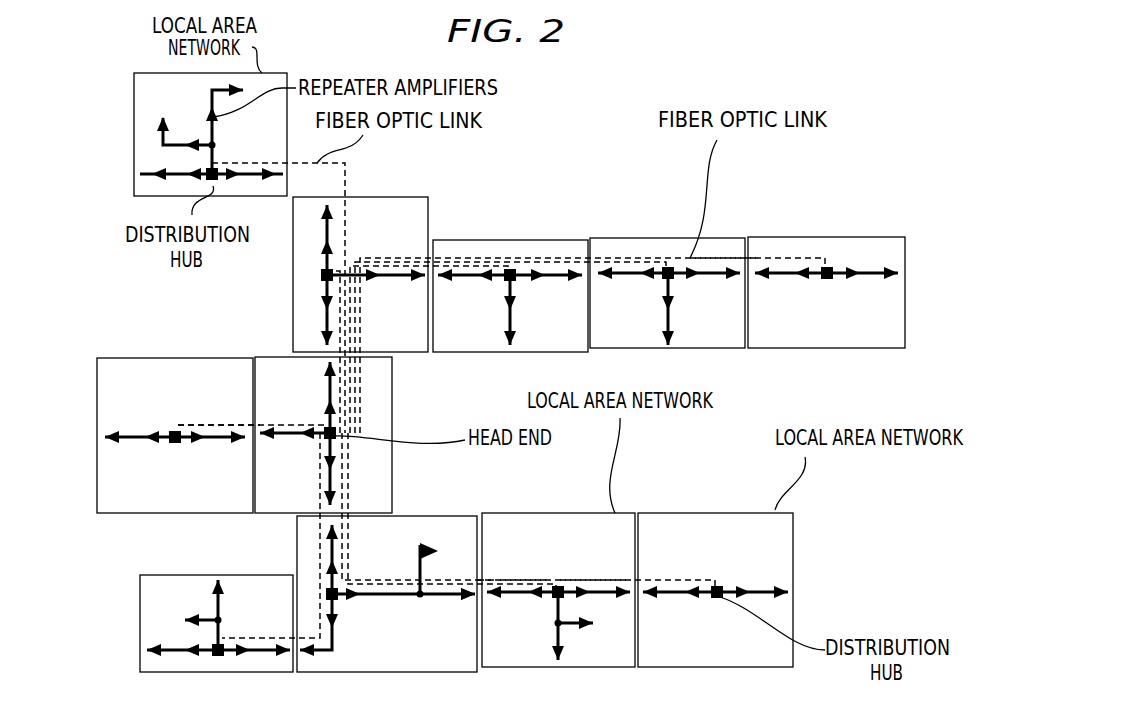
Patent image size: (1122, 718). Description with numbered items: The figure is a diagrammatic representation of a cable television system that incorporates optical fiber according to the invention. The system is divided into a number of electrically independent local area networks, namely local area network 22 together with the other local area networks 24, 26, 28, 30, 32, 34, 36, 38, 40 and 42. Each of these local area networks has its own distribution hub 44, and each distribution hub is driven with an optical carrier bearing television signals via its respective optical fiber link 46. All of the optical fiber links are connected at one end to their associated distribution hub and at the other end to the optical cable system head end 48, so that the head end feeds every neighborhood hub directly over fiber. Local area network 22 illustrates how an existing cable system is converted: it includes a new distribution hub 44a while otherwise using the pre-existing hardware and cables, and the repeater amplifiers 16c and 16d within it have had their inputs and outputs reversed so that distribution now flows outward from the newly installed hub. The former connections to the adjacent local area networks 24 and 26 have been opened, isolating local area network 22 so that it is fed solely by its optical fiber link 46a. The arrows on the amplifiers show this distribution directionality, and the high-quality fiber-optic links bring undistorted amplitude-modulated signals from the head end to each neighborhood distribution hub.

The local area network 22 is at (552, 513).
The local area network 24 is at (712, 513).
The local area network 26 is at (412, 516).
The local area network 28 is at (140, 622).
The local area network 30 is at (97, 492).
The local area network 32 is at (393, 388).
The local area network 34 is at (134, 160).
The local area network 36 is at (400, 197).
The local area network 38 is at (518, 240).
The local area network 40 is at (645, 238).
The local area network 42 is at (800, 237).
The distribution hub 44 is at (666, 282).
The distribution hub 44a is at (555, 600).
The optical fiber link 46 is at (715, 258).
The optical fiber link 46a is at (478, 598).
The head end 48 is at (393, 437).
The repeater amplifier 16c is at (483, 585).
The repeater amplifier 16d is at (528, 578).